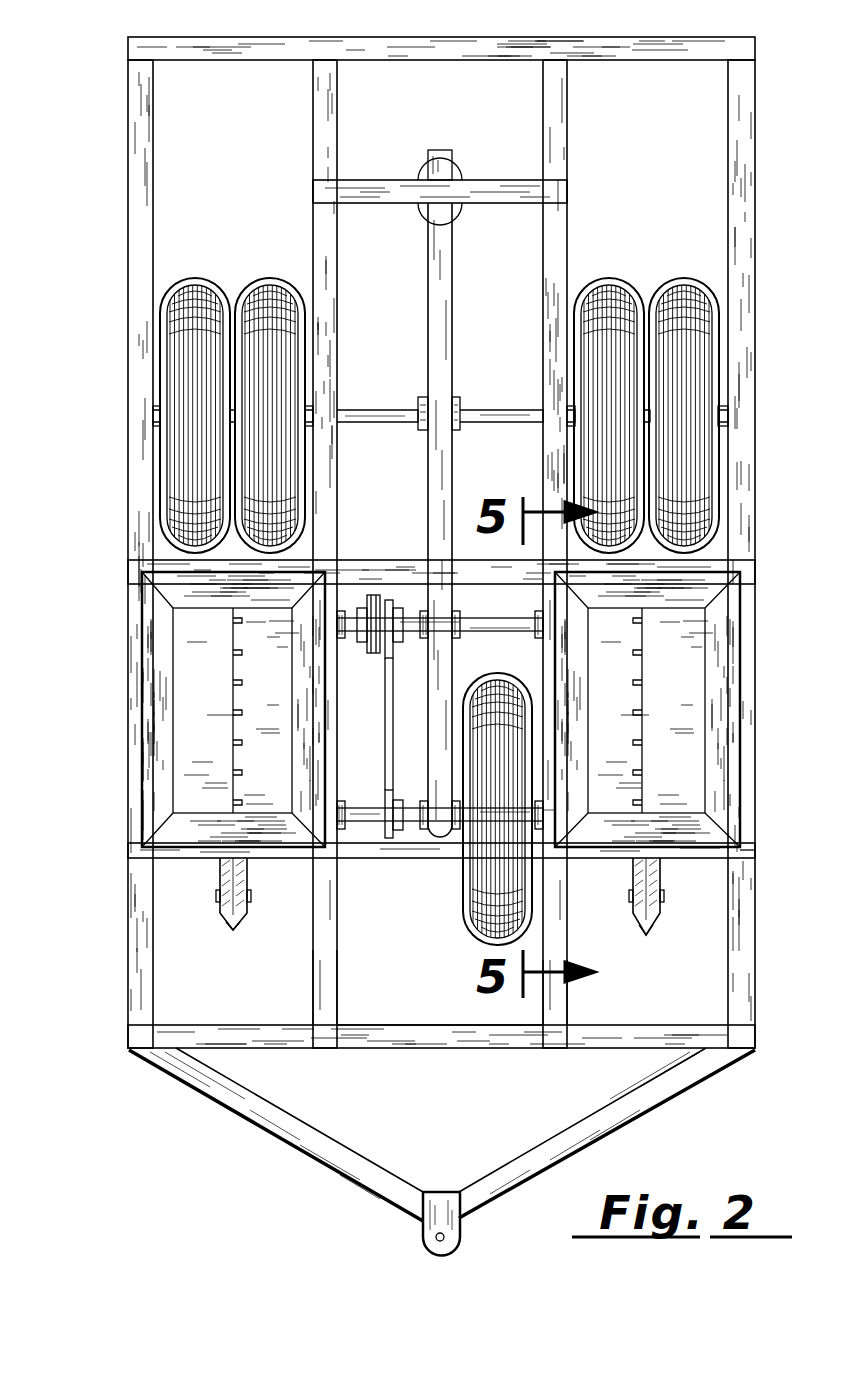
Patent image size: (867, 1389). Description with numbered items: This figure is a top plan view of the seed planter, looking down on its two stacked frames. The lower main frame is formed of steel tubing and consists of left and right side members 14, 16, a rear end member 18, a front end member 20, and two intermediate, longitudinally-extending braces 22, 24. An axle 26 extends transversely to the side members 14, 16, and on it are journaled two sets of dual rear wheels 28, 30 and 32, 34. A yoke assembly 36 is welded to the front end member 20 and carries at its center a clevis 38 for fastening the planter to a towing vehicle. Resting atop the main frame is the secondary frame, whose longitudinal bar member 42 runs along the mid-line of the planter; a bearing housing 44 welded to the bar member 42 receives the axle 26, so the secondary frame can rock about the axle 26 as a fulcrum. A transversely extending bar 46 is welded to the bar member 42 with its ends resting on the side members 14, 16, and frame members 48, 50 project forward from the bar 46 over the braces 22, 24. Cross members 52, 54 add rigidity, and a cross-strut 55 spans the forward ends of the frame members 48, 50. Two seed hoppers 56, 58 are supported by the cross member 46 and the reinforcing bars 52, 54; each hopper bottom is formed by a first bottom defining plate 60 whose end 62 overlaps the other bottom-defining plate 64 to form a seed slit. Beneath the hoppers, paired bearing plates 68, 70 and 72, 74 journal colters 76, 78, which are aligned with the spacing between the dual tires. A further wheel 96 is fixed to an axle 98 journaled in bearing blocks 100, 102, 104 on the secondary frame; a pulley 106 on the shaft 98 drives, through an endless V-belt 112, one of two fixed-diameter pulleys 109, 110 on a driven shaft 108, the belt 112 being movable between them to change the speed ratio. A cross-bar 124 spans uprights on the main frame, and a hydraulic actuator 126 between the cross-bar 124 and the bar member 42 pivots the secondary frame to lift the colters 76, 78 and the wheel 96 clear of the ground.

The left side member 14 is at (755, 116).
The right side member 16 is at (128, 122).
The rear end member 18 is at (455, 37).
The front end member 20 is at (272, 1048).
The longitudinally-extending brace 22 is at (567, 118).
The longitudinally-extending brace 24 is at (313, 118).
The axle 26 is at (385, 410).
The rear wheel 28 is at (190, 278).
The rear wheel 30 is at (283, 278).
The rear wheel 32 is at (608, 278).
The rear wheel 34 is at (683, 278).
The yoke assembly 36 is at (630, 1129).
The clevis 38 is at (460, 1240).
The longitudinal bar member 42 is at (452, 320).
The bearing housing 44 is at (460, 397).
The transversely extending bar 46 is at (388, 560).
The frame member 48 is at (337, 990).
The frame member 50 is at (567, 997).
The cross member 52 is at (128, 852).
The cross member 54 is at (755, 852).
The cross-strut 55 is at (400, 1030).
The seed hopper 56 is at (142, 708).
The seed hopper 58 is at (740, 708).
The first bottom defining plate 60 is at (659, 702).
The end of first bottom plate 62 is at (645, 762).
The bottom-defining plate 64 is at (600, 702).
The bearing plate 68 is at (663, 882).
The bearing plate 70 is at (632, 882).
The bearing plate 72 is at (250, 882).
The bearing plate 74 is at (218, 882).
The colter 76 is at (653, 925).
The colter 78 is at (228, 920).
The drive wheel 96 is at (470, 940).
The axle 98 is at (415, 800).
The bearing block 100 is at (345, 806).
The bearing block 102 is at (425, 833).
The bearing block 104 is at (545, 812).
The pulley 106 is at (380, 833).
The driven shaft 108 is at (475, 620).
The V-belt pulley 109 is at (375, 600).
The V-belt pulley 110 is at (392, 658).
The V-belt 112 is at (385, 725).
The cross-bar 124 is at (358, 180).
The hydraulic actuator 126 is at (458, 180).